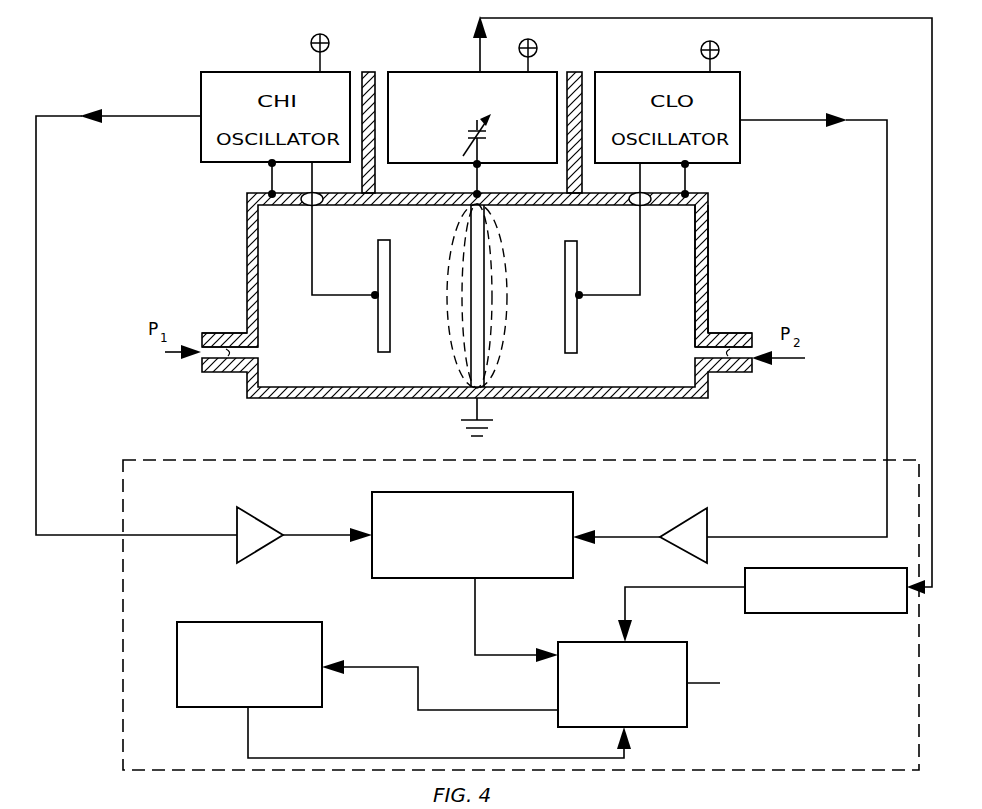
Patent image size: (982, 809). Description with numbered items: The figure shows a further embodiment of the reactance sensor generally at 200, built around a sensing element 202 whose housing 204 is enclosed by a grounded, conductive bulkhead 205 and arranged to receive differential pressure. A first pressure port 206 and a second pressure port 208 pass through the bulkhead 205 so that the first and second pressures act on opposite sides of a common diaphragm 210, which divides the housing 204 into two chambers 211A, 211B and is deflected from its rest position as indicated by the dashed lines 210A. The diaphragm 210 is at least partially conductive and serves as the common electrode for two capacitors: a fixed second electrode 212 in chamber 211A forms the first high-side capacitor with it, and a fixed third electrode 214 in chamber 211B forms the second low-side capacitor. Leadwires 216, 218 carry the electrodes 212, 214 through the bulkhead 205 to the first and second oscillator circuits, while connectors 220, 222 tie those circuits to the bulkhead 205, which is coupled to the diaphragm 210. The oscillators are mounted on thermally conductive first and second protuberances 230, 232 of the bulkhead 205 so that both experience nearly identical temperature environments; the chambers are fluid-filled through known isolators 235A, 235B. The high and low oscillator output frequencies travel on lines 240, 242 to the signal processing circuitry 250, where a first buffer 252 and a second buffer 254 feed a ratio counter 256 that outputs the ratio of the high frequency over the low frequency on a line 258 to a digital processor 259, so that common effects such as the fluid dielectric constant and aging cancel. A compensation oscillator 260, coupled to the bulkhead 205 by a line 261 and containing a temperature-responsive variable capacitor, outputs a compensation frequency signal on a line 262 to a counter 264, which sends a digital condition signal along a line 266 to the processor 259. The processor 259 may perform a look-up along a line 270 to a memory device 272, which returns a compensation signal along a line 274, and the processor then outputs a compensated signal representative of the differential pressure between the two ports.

The reactance sensor embodiment 200 is at (158, 27).
The sensing element 202 is at (200, 236).
The housing 204 is at (710, 254).
The bulkhead 205 is at (708, 284).
The first pressure port 206 is at (222, 327).
The second pressure port 208 is at (722, 338).
The common diaphragm 210 is at (486, 332).
The diaphragm deflection 210A is at (458, 310).
The first chamber 211A is at (323, 384).
The second chamber 211B is at (672, 384).
The second electrode 212 is at (375, 330).
The third electrode 214 is at (578, 333).
The leadwire 216 is at (320, 293).
The leadwire 218 is at (631, 293).
The connector 220 is at (270, 178).
The connector 222 is at (688, 181).
The first protuberance 230 is at (373, 70).
The second protuberance 232 is at (578, 72).
The isolator 235A is at (228, 355).
The isolator 235B is at (731, 356).
The line 240 is at (37, 232).
The line 242 is at (887, 238).
The signal processing circuitry 250 is at (122, 613).
The first buffer 252 is at (258, 518).
The second buffer 254 is at (709, 517).
The ratio counter 256 is at (577, 502).
The line 258 is at (477, 606).
The digital processor 259 is at (690, 713).
The compensation oscillator 260 is at (544, 72).
The line 261 is at (478, 180).
The line 262 is at (796, 20).
The counter 264 is at (819, 614).
The line 266 is at (676, 590).
The line 270 is at (374, 664).
The memory device 272 is at (229, 622).
The line 274 is at (324, 757).